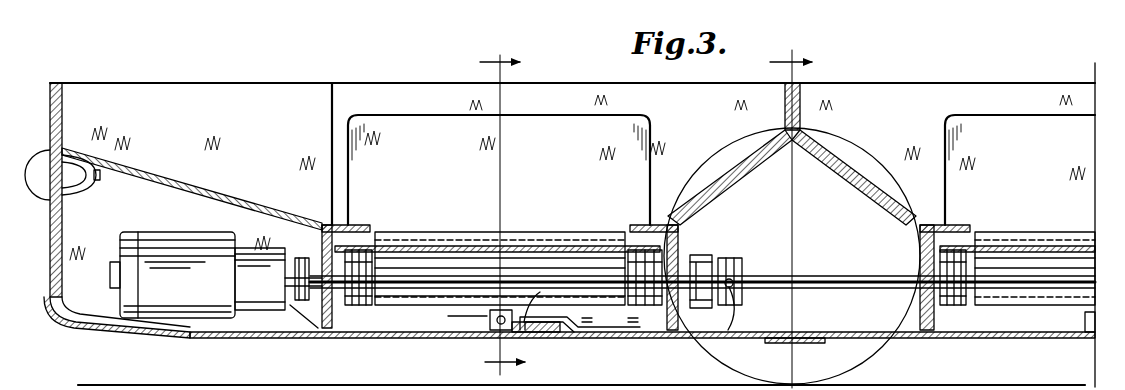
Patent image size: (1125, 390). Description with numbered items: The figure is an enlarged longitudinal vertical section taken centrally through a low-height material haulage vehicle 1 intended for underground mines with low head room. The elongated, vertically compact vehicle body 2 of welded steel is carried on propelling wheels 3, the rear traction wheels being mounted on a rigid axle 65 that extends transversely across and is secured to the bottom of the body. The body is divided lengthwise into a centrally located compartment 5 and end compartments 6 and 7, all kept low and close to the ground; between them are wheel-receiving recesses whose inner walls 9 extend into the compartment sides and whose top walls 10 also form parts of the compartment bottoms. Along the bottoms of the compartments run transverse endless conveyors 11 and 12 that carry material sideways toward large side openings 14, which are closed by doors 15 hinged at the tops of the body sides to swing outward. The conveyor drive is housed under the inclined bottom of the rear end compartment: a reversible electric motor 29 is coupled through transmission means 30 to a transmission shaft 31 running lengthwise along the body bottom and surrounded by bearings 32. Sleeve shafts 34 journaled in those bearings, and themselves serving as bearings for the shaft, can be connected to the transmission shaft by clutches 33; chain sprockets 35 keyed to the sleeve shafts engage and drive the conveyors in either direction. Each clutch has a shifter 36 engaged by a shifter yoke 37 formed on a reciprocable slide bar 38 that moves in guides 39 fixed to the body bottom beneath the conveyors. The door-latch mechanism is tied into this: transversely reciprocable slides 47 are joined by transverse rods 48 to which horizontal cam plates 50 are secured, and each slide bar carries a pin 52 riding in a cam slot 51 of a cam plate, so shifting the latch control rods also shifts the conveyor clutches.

The material haulage vehicle 1 is at (846, 84).
The vehicle body 2 is at (976, 92).
The propelling wheels 3 is at (862, 346).
The central compartment 5 is at (915, 72).
The rear end compartment 6 is at (271, 104).
The end compartment 7 is at (799, 219).
The inner walls 9 is at (731, 158).
The top walls 10 is at (720, 196).
The endless conveyor 11 is at (1018, 240).
The endless conveyor 12 is at (437, 246).
The side openings 14 is at (380, 118).
The doors 15 is at (553, 130).
The electric motor 29 is at (147, 232).
The transmission means 30 is at (302, 302).
The transmission shaft 31 is at (832, 276).
The bearings 32 is at (333, 312).
The clutches 33 is at (706, 258).
The sleeve shafts 34 is at (466, 270).
The chain sprockets 35 is at (391, 242).
The shifter 36 is at (736, 258).
The shifter yoke 37 is at (726, 318).
The slide bars 38 is at (650, 332).
The guides 39 is at (612, 332).
The slides 47 is at (1084, 322).
The transverse rods 48 is at (456, 336).
The cam plates 50 is at (492, 335).
The cam slots 51 is at (526, 320).
The pin 52 is at (534, 332).
The rigid axle 65 is at (786, 343).